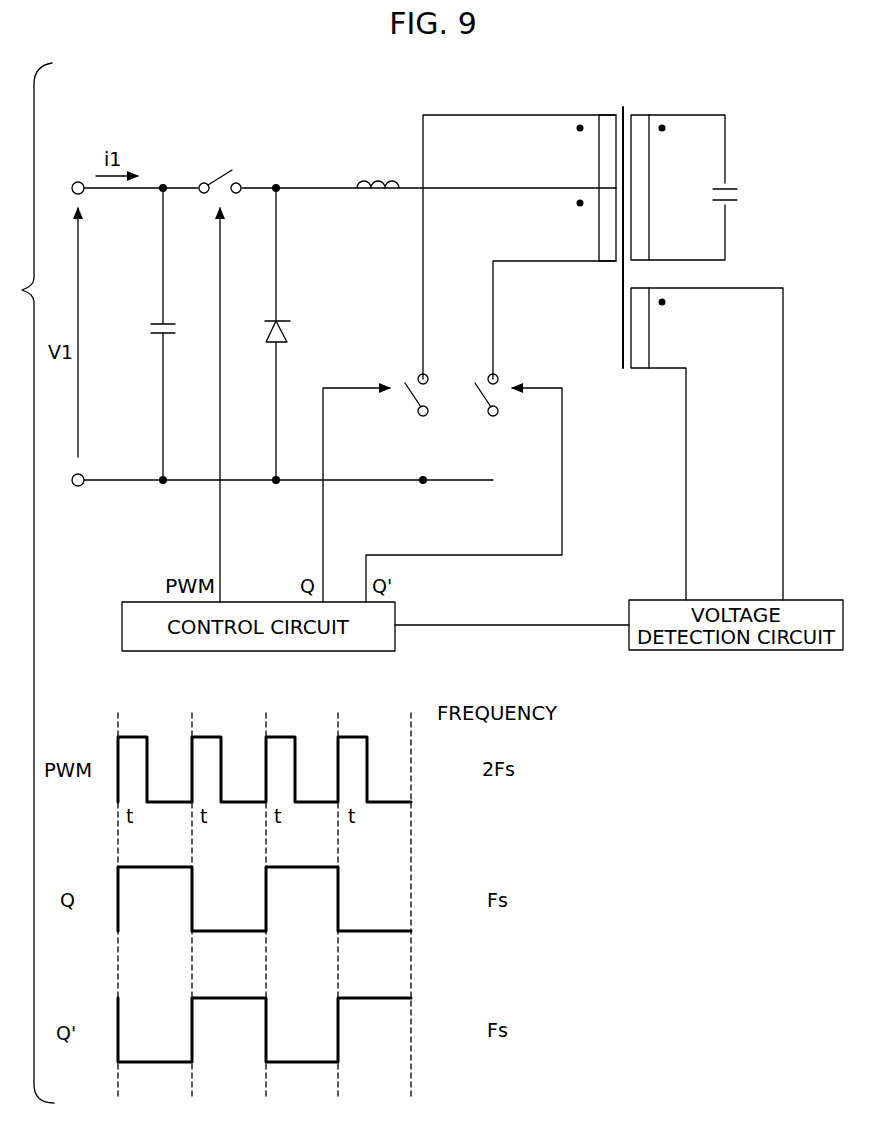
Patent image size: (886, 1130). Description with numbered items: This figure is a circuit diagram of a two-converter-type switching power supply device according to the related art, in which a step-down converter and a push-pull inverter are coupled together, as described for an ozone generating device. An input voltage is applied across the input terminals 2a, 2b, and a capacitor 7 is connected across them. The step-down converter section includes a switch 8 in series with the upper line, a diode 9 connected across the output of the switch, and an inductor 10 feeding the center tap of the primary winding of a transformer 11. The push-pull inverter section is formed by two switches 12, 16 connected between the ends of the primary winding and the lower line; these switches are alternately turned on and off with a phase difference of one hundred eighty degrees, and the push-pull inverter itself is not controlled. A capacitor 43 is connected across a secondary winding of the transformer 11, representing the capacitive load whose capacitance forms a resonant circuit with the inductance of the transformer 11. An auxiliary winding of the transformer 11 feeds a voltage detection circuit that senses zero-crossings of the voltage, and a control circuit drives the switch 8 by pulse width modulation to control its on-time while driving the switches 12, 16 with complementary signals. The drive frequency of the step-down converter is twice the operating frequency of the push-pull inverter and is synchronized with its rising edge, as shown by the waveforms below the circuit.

The input terminal 2a is at (76, 182).
The input terminal 2b is at (74, 486).
The capacitor 7 is at (178, 331).
The switch 8 is at (221, 168).
The diode 9 is at (289, 333).
The inductor 10 is at (380, 180).
The transformer 11 is at (634, 95).
The switch 12 is at (410, 397).
The switch 16 is at (480, 397).
The capacitor 43 is at (740, 194).